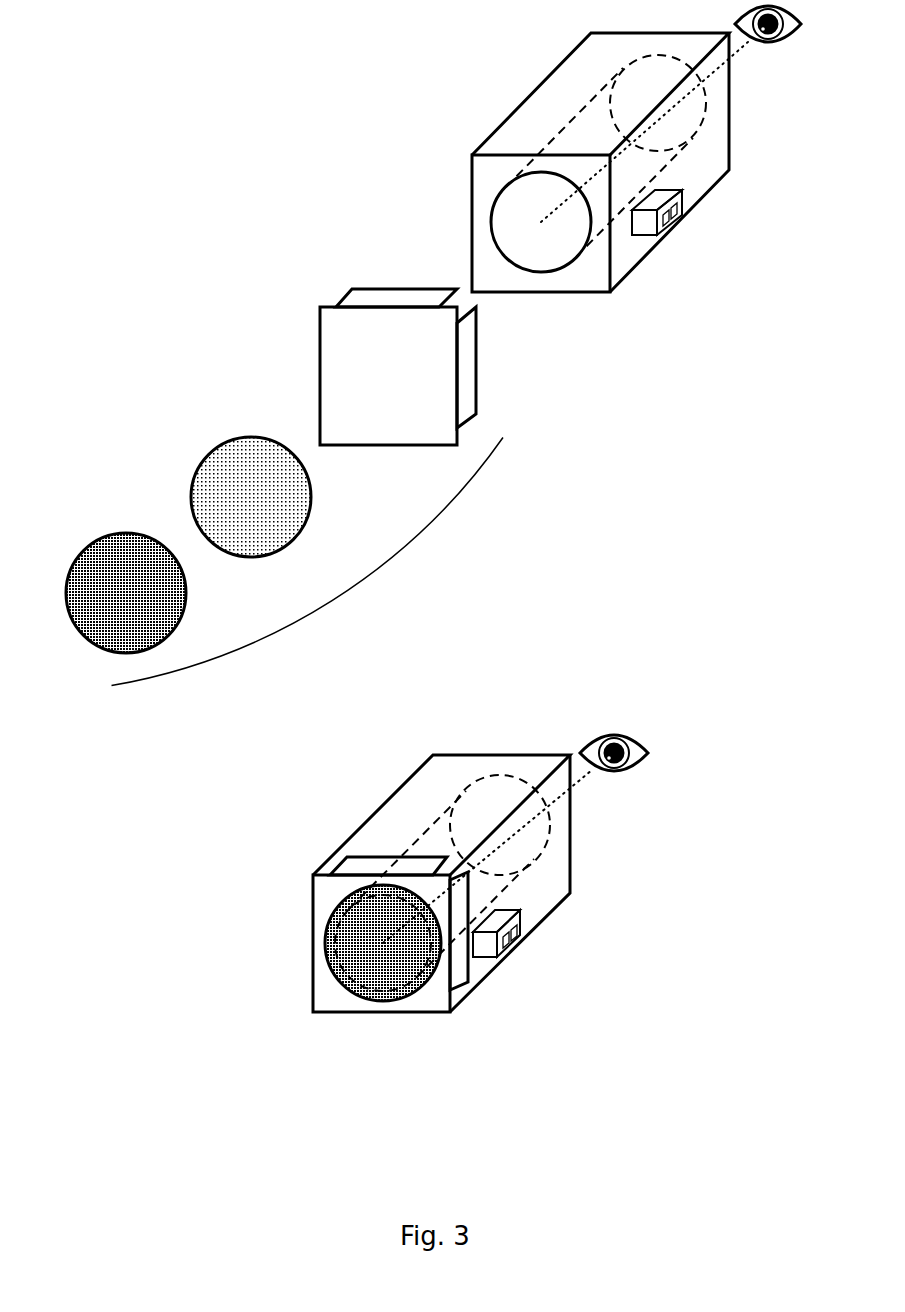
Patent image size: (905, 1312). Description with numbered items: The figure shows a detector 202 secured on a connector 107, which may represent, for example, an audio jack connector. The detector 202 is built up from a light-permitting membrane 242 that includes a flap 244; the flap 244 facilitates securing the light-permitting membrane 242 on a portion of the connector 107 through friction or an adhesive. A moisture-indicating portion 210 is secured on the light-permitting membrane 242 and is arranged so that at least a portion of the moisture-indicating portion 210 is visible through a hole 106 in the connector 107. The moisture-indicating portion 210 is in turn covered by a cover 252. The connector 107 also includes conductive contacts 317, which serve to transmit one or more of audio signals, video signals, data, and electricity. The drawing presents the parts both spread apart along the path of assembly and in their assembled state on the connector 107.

The hole 106 is at (513, 227).
The connector 107 is at (527, 125).
The detector 202 is at (403, 548).
The moisture-indicating portion 210 is at (215, 472).
The light-permitting membrane 242 is at (331, 361).
The flap 244 is at (400, 298).
The cover 252 is at (86, 570).
The conductive contacts 317 is at (678, 222).